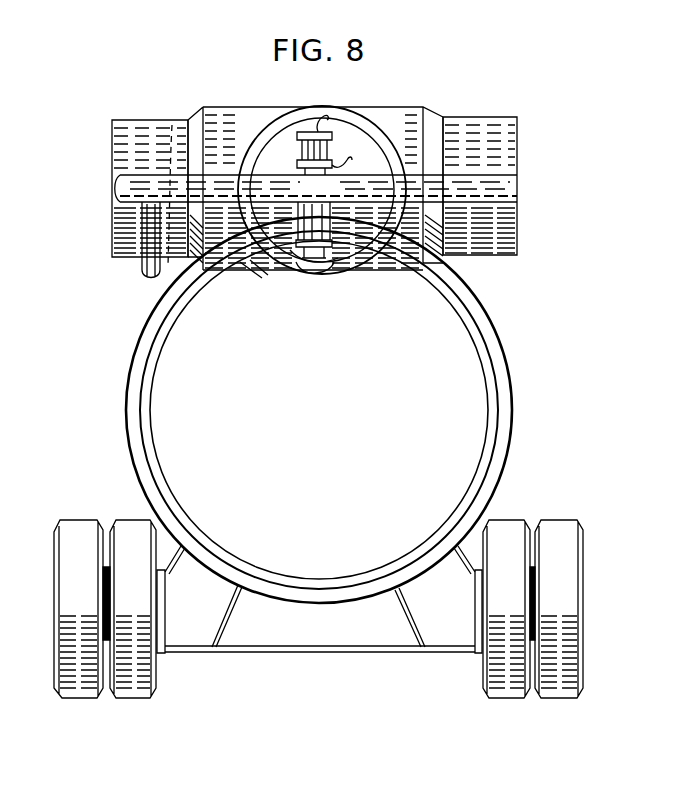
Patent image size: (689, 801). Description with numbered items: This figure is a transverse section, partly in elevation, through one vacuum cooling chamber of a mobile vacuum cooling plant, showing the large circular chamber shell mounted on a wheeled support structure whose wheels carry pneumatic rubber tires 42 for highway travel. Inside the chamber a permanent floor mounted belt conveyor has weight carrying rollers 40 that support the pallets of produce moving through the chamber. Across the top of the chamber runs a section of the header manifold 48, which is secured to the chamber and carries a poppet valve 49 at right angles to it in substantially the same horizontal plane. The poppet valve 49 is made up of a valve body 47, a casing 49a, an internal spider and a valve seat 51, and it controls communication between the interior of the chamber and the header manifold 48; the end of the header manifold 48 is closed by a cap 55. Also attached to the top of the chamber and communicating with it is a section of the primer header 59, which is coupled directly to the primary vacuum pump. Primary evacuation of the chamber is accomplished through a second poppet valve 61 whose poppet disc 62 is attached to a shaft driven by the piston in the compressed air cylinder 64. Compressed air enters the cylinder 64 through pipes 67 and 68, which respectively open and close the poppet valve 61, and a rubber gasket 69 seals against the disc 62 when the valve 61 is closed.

The weight carrying rollers 40 is at (360, 250).
The pneumatic rubber tires 42 is at (585, 652).
The valve body 47 is at (255, 272).
The header manifold 48 is at (130, 121).
The poppet valve 49 is at (347, 137).
The casing 49a is at (326, 120).
The valve seat 51 is at (302, 262).
The cap 55 is at (175, 135).
The primer header 59 is at (490, 180).
The poppet valve 61 is at (295, 245).
The poppet disc 62 is at (337, 252).
The compressed air cylinder 64 is at (292, 160).
The pipe 67 is at (322, 130).
The pipe 68 is at (350, 160).
The rubber gasket 69 is at (300, 250).